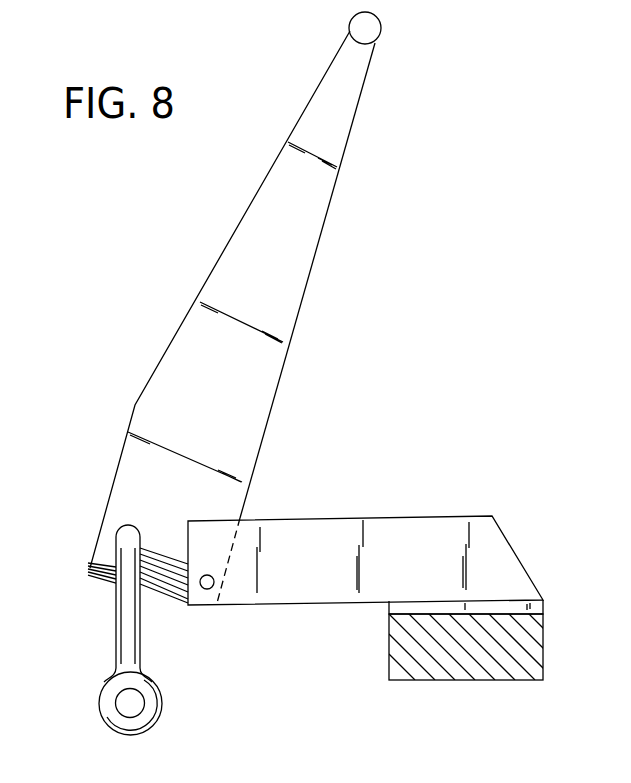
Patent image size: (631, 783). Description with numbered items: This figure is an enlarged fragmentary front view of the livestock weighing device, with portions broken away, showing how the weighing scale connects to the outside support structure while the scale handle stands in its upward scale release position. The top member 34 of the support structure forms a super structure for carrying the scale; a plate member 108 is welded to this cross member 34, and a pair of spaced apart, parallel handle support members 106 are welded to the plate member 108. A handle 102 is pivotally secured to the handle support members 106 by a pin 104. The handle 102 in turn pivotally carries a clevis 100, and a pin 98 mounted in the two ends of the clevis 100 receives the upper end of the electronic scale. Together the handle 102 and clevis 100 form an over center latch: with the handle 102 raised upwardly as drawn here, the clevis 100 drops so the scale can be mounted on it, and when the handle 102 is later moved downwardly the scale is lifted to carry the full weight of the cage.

The handle 102 is at (256, 458).
The handle support members 106 is at (377, 523).
The plate member 108 is at (502, 607).
The top member 34 is at (389, 660).
The clevis 100 is at (128, 620).
The pin 104 is at (208, 589).
The pin 98 is at (133, 704).